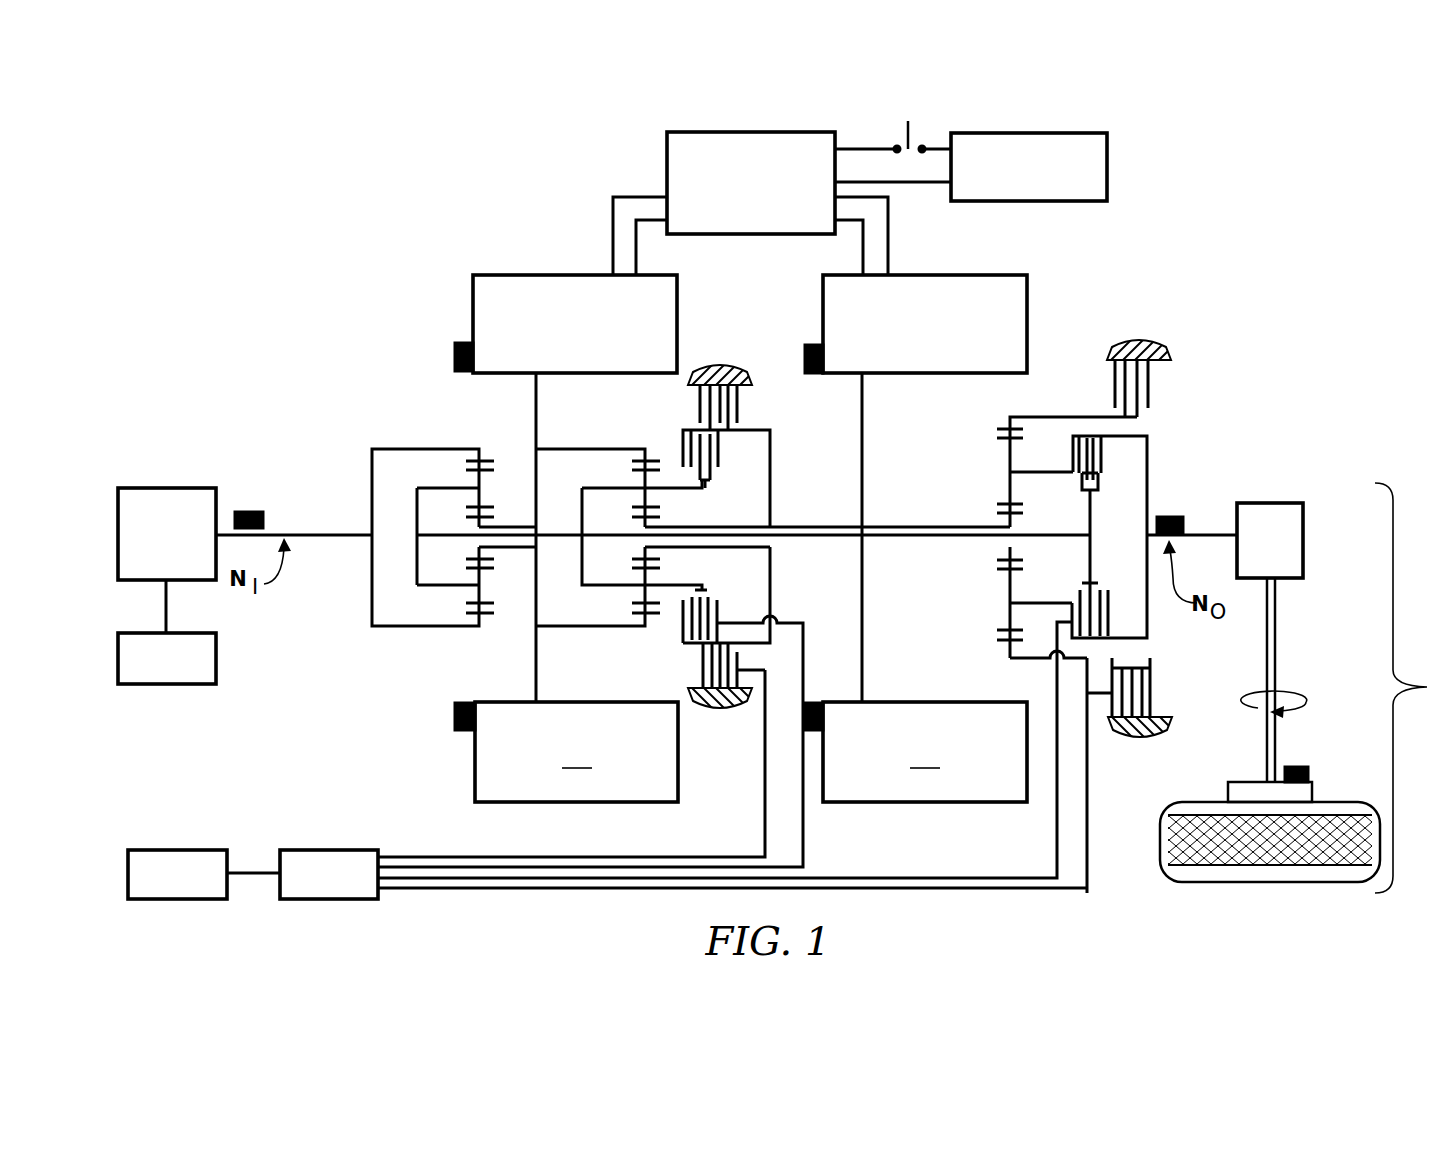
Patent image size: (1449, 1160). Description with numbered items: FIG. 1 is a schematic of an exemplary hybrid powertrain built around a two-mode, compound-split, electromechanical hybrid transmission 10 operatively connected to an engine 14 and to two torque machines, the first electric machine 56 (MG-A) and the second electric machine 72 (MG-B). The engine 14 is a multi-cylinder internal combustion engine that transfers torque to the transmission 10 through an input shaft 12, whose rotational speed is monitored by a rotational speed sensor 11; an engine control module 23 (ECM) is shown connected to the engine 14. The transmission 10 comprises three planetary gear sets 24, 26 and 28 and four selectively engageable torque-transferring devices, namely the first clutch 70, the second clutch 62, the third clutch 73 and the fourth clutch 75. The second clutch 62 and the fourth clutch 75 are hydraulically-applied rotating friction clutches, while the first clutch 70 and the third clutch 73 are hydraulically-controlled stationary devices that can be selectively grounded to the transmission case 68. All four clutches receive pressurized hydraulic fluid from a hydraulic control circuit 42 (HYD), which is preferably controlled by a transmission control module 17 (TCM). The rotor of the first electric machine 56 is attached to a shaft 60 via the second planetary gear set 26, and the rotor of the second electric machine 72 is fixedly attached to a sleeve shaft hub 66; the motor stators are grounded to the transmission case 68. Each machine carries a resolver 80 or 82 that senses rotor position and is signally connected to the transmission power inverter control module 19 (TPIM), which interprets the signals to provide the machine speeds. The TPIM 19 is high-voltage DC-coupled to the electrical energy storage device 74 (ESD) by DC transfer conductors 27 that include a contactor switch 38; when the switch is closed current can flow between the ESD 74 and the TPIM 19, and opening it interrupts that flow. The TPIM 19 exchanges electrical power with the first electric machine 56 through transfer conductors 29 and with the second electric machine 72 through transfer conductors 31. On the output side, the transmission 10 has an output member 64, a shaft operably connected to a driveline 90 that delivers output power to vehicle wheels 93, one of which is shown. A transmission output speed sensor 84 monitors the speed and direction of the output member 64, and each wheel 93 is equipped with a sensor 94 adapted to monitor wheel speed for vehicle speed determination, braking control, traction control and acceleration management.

The electromechanical hybrid transmission 10 is at (432, 244).
The rotational speed sensor 11 is at (249, 512).
The input shaft 12 is at (330, 533).
The engine 14 is at (172, 488).
The transmission control module 17 is at (167, 850).
The transmission power inverter control module 19 is at (667, 150).
The engine control module (ECM) 23 is at (214, 675).
The first planetary gear set 24 is at (470, 449).
The second planetary gear set 26 is at (637, 449).
The DC transfer conductors 27 is at (852, 148).
The third planetary gear set 28 is at (1005, 418).
The transfer conductors 29 is at (613, 235).
The transfer conductors 31 is at (888, 232).
The contactor switch 38 is at (910, 126).
The hydraulic control circuit 42 is at (295, 850).
The first electric machine 56 is at (473, 310).
The shaft 60 is at (1063, 535).
The clutch C2 62 is at (1102, 479).
The output member 64 is at (1208, 533).
The sleeve shaft hub 66 is at (900, 527).
The transmission case 68 is at (718, 364).
The clutch C1 70 is at (1110, 382).
The second electric machine 72 is at (1030, 290).
The clutch C3 73 is at (740, 410).
The electrical energy storage device 74 is at (1110, 152).
The clutch C4 75 is at (718, 456).
The resolver 80 is at (455, 356).
The resolver 82 is at (813, 345).
The transmission output speed sensor 84 is at (1170, 517).
The driveline 90 is at (1300, 688).
The vehicle wheel 93 is at (1228, 790).
The wheel speed sensor 94 is at (1296, 765).